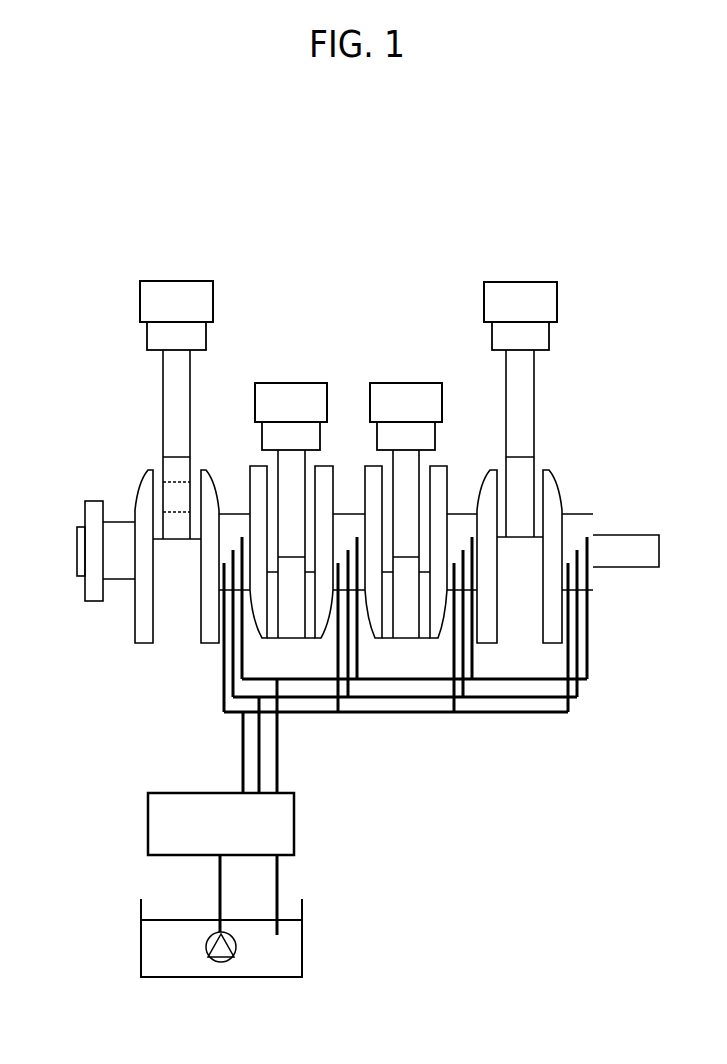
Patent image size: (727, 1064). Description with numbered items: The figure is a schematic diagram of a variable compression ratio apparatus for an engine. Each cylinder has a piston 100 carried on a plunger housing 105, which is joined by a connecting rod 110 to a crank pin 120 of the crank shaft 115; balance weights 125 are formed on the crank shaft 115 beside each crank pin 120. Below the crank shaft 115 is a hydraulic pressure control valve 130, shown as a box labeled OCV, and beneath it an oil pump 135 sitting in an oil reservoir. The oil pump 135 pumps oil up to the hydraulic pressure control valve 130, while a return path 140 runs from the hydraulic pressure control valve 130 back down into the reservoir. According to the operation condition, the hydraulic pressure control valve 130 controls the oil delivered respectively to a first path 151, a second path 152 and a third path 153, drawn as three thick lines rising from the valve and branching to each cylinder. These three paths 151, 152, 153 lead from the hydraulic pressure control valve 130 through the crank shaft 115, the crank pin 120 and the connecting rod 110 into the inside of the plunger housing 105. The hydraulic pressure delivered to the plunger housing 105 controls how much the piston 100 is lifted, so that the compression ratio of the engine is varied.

The piston 100 is at (280, 388).
The plunger housing 105 is at (148, 332).
The connecting rod 110 is at (163, 413).
The crank shaft 115 is at (117, 550).
The crank pin 120 is at (178, 483).
The balance weight 125 is at (138, 633).
The hydraulic pressure control valve 130 is at (294, 818).
The oil pump 135 is at (221, 963).
The return path 140 is at (277, 881).
The first path 151 is at (277, 773).
The second path 152 is at (243, 761).
The third path 153 is at (262, 747).